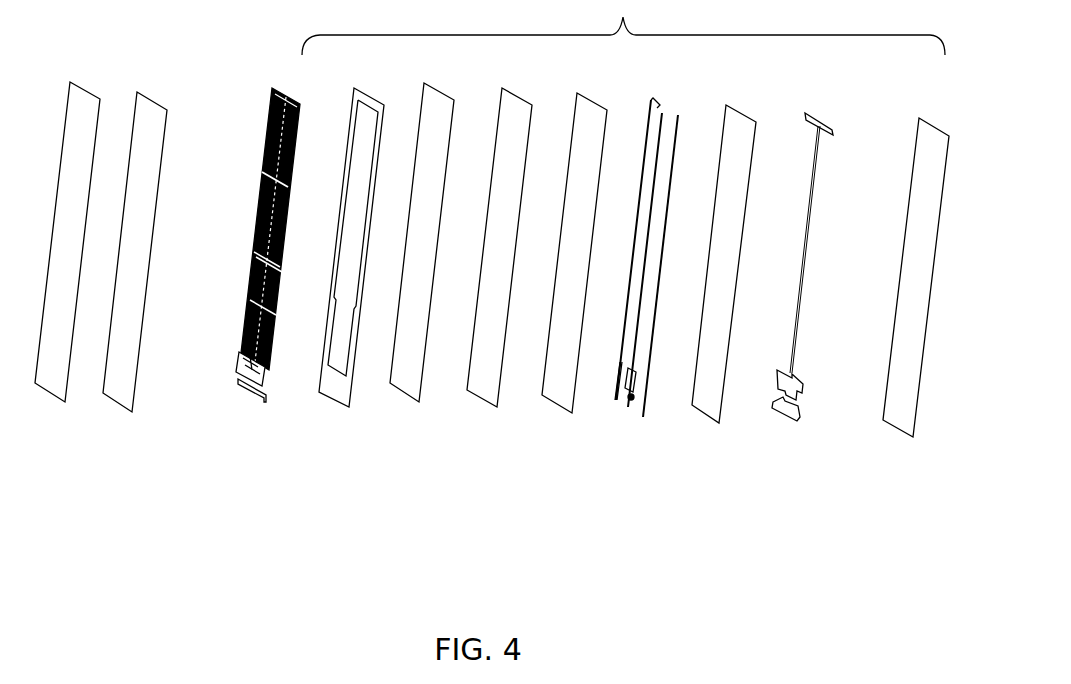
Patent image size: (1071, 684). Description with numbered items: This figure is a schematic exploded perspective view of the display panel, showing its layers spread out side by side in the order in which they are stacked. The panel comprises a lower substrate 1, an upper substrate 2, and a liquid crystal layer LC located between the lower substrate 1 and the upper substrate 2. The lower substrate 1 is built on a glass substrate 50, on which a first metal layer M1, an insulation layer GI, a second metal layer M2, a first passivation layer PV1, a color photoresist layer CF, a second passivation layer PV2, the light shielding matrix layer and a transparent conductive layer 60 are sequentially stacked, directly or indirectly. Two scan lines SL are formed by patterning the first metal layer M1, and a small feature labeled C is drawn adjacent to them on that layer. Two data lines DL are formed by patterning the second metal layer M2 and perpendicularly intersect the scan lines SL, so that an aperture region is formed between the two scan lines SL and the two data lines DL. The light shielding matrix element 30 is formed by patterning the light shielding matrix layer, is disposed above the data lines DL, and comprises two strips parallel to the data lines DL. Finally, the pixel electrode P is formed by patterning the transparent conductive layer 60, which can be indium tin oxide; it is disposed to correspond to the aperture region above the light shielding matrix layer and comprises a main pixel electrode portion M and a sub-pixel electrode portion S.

The lower substrate 1 is at (610, 485).
The upper substrate 2 is at (55, 413).
The liquid crystal layer LC is at (118, 420).
The pixel electrode P is at (300, 95).
The sub-pixel electrode portion S is at (289, 185).
The main pixel electrode portion M is at (276, 312).
The transparent conductive layer 60 is at (253, 402).
The light shielding matrix element 30 is at (340, 412).
The second passivation layer PV2 is at (408, 400).
The color photoresist layer CF is at (483, 403).
The first passivation layer PV1 is at (560, 410).
The second metal layer M2 is at (620, 408).
The data line DL is at (658, 291).
The insulation layer GI is at (705, 418).
The capacitor electrode C is at (795, 382).
The first metal layer M1 is at (780, 427).
The scan line SL is at (797, 423).
The glass substrate 50 is at (907, 437).